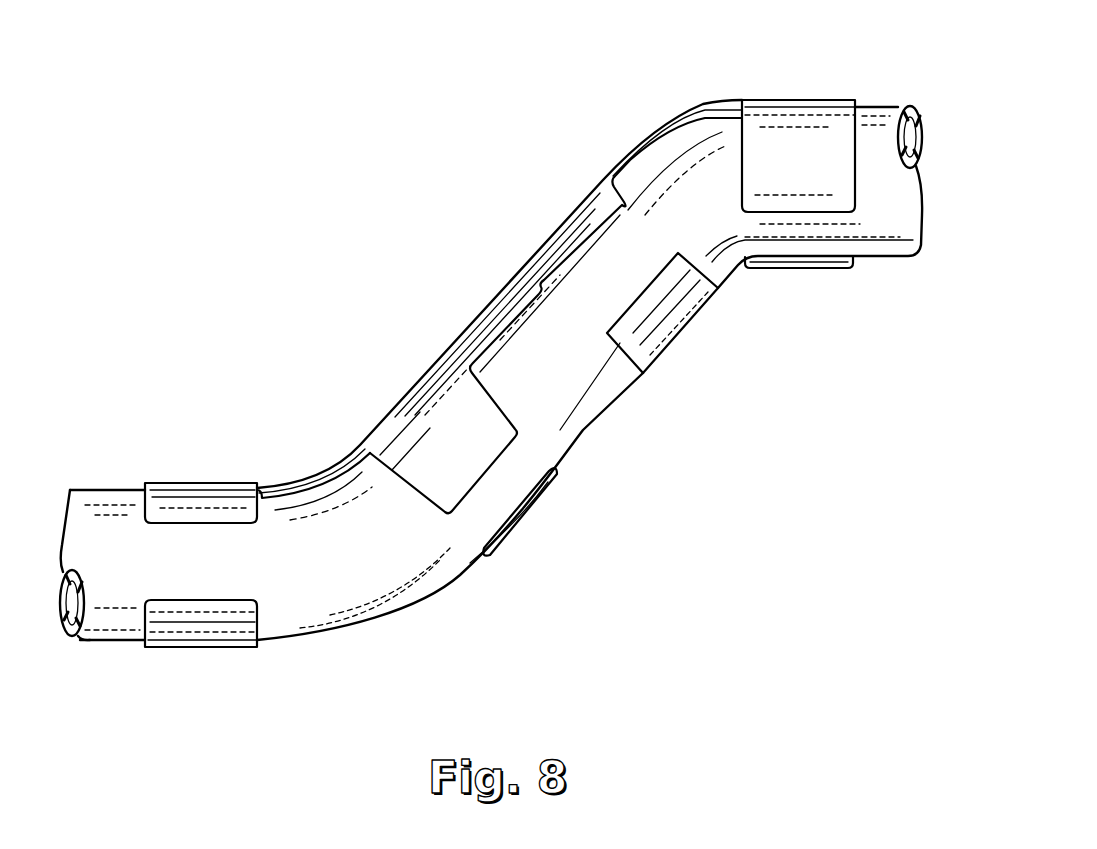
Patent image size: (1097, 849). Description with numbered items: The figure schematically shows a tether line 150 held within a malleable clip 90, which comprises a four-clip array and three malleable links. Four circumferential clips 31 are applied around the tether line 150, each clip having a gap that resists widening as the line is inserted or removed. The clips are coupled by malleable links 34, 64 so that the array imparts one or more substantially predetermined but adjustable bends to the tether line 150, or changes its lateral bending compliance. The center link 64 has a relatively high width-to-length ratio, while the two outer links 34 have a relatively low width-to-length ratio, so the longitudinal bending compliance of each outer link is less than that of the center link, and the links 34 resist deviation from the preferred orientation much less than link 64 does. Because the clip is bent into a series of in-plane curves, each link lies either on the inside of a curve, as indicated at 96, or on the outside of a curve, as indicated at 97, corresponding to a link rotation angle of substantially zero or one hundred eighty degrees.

The circumferential clip 31 is at (790, 86).
The malleable link 34 is at (631, 146).
The malleable link 64 is at (480, 320).
The malleable clip 90 is at (468, 295).
The link on the inside of the curve 96 is at (312, 462).
The link on the outside of the curve 97 is at (653, 110).
The tether line 150 is at (913, 96).